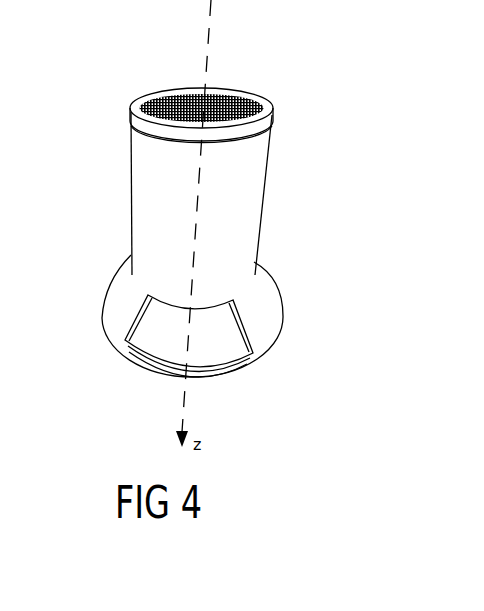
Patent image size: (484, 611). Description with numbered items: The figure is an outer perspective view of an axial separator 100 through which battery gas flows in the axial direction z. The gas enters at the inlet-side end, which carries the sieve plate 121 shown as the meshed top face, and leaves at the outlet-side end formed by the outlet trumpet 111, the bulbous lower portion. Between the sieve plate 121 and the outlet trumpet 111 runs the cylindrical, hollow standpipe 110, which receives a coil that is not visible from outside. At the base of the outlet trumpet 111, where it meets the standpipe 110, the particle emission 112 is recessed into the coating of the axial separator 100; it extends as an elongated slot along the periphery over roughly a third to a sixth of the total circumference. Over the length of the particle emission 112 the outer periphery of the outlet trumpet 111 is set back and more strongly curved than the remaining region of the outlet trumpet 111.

The axial separator 100 is at (277, 85).
The standpipe 110 is at (262, 217).
The outlet trumpet 111 is at (252, 328).
The particle emission 112 is at (140, 303).
The sieve plate 121 is at (140, 98).